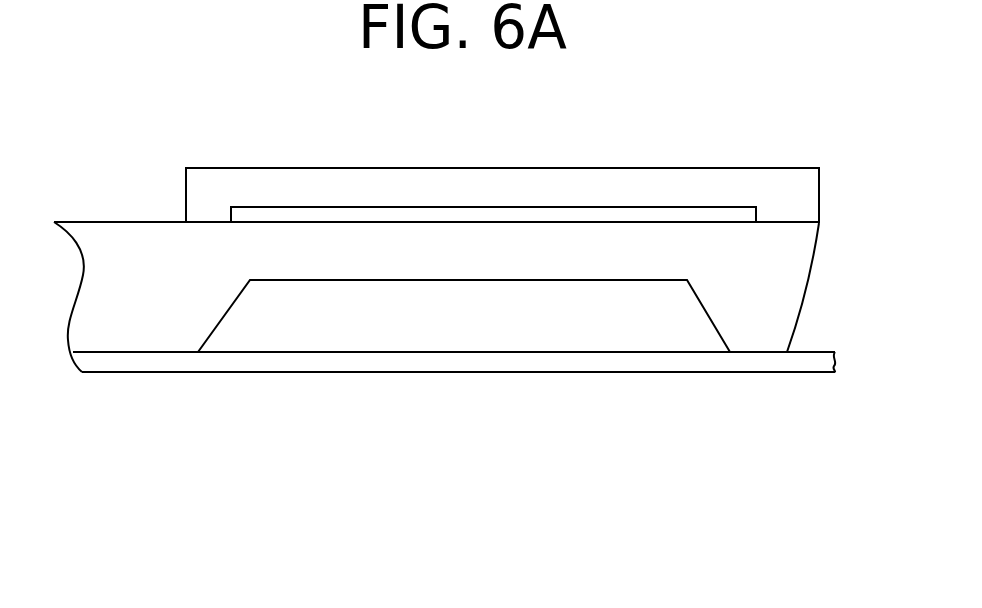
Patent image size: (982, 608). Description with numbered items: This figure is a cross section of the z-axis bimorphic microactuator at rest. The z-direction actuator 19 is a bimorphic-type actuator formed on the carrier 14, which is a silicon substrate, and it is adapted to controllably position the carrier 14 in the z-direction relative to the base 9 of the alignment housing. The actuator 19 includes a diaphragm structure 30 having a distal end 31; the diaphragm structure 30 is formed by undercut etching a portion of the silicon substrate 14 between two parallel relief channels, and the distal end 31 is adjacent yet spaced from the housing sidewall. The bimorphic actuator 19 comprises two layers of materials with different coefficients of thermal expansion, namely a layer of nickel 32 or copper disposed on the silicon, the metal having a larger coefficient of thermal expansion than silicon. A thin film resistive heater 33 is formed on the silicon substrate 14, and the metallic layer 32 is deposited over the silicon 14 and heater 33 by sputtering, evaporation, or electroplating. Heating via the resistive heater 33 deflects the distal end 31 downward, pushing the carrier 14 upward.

The base 9 is at (460, 358).
The carrier 14 is at (127, 330).
The z-direction actuator 19 is at (808, 153).
The diaphragm structure 30 is at (498, 272).
The distal end 31 is at (778, 318).
The layer of nickel 32 is at (222, 206).
The thin film resistive heater 33 is at (527, 213).